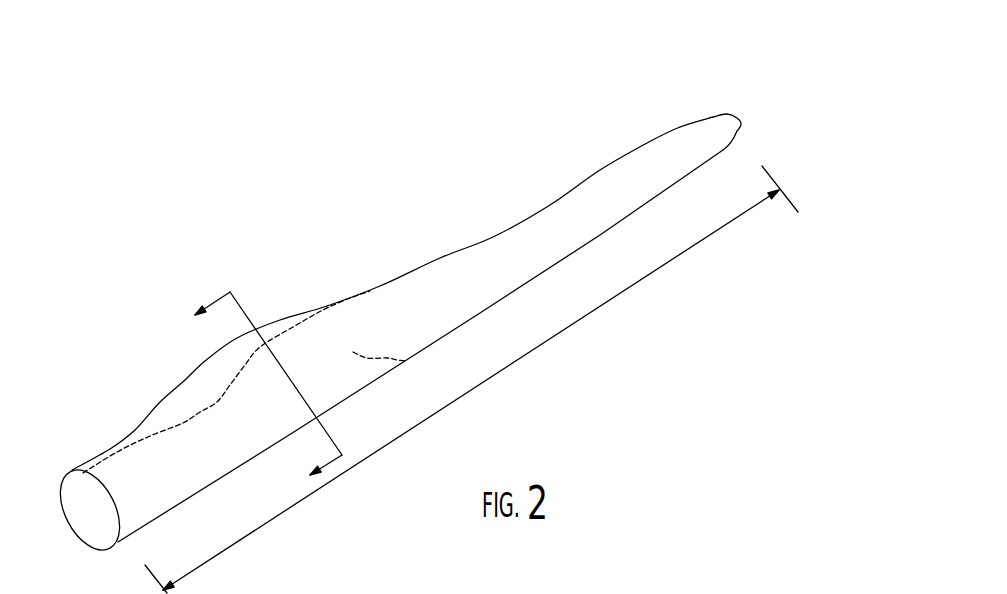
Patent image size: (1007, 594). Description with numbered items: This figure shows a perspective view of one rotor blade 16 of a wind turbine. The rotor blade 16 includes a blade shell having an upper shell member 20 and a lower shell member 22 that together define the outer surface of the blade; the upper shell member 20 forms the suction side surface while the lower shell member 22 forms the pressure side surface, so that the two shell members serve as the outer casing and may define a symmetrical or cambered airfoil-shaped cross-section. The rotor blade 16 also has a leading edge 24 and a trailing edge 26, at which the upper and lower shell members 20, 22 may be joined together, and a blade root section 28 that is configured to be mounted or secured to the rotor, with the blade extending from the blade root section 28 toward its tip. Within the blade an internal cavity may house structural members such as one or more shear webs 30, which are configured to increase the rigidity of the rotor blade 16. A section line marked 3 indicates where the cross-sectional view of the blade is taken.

The rotor blade 16 is at (368, 223).
The upper shell member 20 is at (225, 400).
The lower shell member 22 is at (407, 362).
The leading edge 24 is at (493, 305).
The trailing edge 26 is at (493, 237).
The blade root section 28 is at (132, 463).
The shear web 30 is at (687, 143).
The section line 3- 3 is at (260, 396).